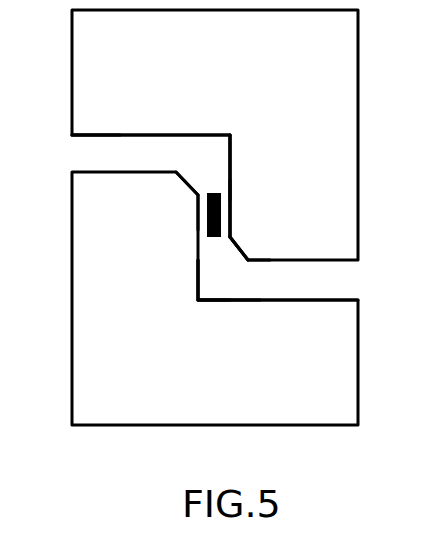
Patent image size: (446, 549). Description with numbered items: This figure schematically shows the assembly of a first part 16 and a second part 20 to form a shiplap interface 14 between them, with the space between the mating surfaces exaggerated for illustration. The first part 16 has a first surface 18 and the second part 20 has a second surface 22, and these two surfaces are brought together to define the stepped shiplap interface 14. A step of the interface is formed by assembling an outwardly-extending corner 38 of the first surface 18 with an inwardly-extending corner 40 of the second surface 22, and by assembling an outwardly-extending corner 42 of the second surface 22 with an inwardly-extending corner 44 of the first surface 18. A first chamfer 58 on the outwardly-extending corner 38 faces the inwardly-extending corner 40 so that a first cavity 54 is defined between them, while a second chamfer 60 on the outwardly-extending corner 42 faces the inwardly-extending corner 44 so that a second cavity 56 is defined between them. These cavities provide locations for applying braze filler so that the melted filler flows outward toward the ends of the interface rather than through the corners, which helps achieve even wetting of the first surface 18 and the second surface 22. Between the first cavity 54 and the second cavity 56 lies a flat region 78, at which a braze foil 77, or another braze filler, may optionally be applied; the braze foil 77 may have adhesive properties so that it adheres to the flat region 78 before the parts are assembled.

The shiplap interface 14 is at (134, 151).
The first part 16 is at (347, 50).
The first surface 18 is at (102, 137).
The second part 20 is at (87, 265).
The second surface 22 is at (315, 298).
The outwardly-extending corner of the first surface 38 is at (243, 253).
The inwardly-extending corner of the second surface 40 is at (197, 301).
The outwardly-extending corner of the second surface 42 is at (182, 180).
The inwardly-extending corner of the first surface 44 is at (230, 165).
The first cavity 54 is at (219, 283).
The second cavity 56 is at (196, 160).
The first chamfer 58 is at (232, 237).
The second chamfer 60 is at (195, 194).
The braze foil 77 is at (223, 192).
The flat region 78 is at (232, 203).